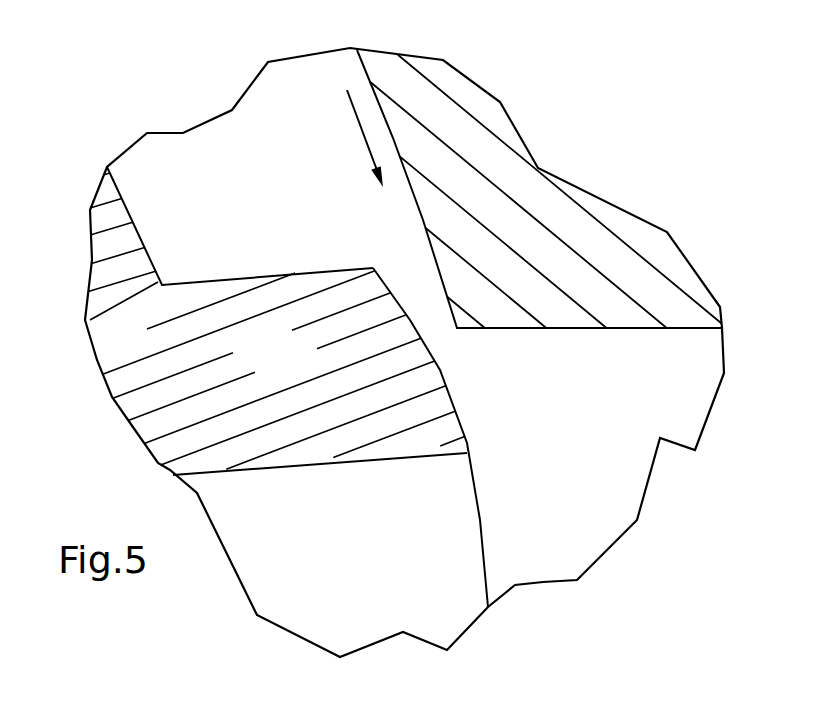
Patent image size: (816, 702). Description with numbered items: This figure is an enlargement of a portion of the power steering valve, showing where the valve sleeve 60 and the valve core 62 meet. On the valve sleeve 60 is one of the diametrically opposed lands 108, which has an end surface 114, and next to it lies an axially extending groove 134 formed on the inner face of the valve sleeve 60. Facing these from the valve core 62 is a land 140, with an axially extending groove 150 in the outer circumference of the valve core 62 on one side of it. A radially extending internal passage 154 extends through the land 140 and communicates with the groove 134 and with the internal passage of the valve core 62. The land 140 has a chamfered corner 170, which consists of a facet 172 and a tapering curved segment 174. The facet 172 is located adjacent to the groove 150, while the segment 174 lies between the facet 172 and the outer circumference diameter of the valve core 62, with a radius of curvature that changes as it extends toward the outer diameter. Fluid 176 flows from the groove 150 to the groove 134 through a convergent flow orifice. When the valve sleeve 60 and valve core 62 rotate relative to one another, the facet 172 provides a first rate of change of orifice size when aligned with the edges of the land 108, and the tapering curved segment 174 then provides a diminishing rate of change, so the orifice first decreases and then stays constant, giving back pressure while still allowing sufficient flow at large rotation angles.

The valve sleeve 60 is at (680, 283).
The valve core 62 is at (138, 348).
The land 108 is at (596, 228).
The end surface 114 is at (358, 58).
The groove 134 is at (583, 486).
The land 140 is at (302, 365).
The groove 150 is at (236, 204).
The internal passage 154 is at (384, 552).
The chamfered corner 170 is at (378, 303).
The facet 172 is at (394, 272).
The tapering curved segment 174 is at (447, 392).
The fluid 176 is at (360, 133).